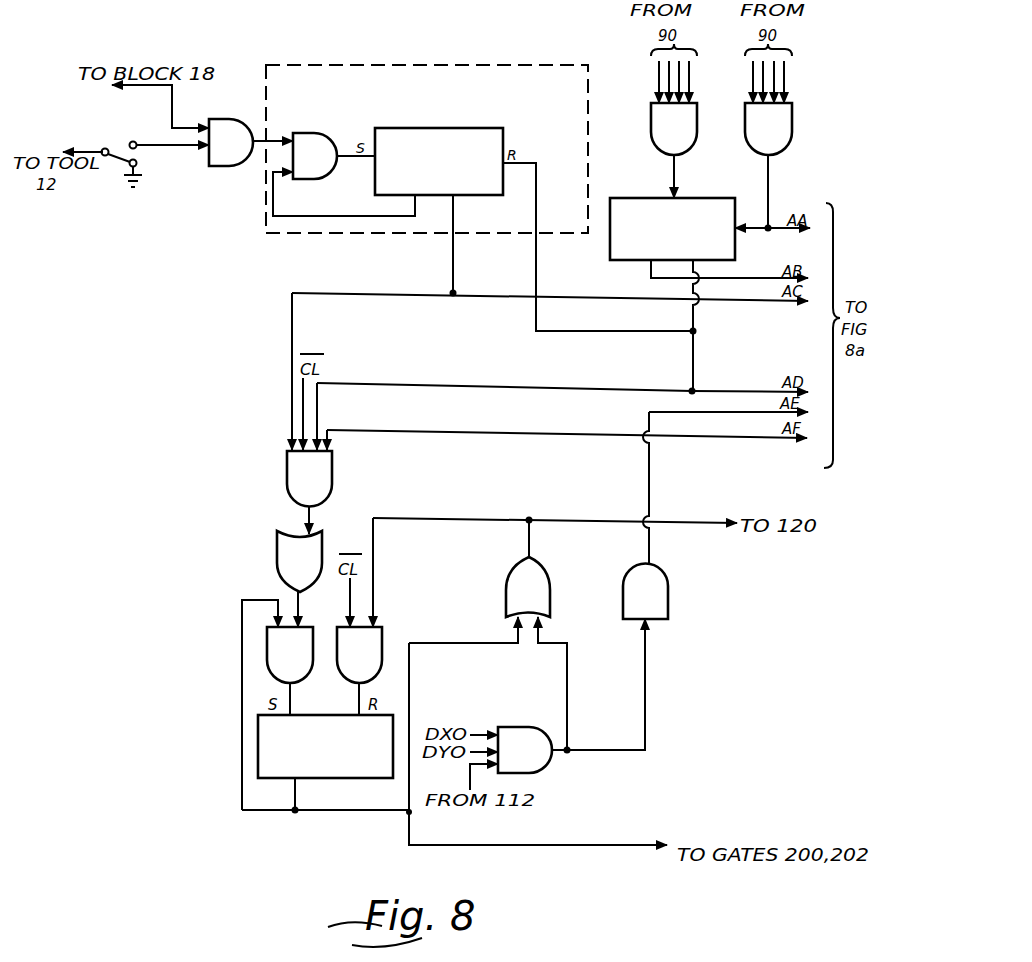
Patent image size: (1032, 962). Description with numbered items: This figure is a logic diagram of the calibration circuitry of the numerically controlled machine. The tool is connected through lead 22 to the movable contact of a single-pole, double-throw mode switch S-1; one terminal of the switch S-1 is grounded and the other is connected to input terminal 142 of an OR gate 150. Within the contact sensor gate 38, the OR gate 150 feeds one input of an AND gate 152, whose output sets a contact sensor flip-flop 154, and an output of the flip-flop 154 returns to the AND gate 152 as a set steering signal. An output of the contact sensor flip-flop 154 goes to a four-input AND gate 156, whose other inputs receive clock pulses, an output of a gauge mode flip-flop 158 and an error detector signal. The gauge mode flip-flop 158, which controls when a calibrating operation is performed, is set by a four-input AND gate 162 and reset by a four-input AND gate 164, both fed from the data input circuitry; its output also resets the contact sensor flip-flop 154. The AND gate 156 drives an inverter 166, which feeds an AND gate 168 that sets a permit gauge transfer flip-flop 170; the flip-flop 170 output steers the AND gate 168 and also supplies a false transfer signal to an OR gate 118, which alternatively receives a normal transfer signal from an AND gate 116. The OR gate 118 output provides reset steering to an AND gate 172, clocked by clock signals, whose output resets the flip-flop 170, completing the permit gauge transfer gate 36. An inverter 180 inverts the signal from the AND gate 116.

The lead 22 is at (104, 148).
The mode switch S-1 is at (116, 162).
The permit gauge transfer gate 36 is at (232, 705).
The contact sensor gate 38 is at (341, 236).
The AND gate 116 is at (540, 773).
The OR gate 118 is at (510, 576).
The input terminal 142 is at (174, 147).
The OR gate 150 is at (256, 104).
The AND gate 152 is at (321, 180).
The contact sensor flip-flop 154 is at (476, 128).
The four-input AND gate 156 is at (332, 472).
The gauge mode flip-flop 158 is at (735, 244).
The AND gate 162 is at (689, 156).
The AND gate 164 is at (784, 156).
The inverter 166 is at (277, 554).
The AND gate 168 is at (306, 683).
The permit gauge transfer flip-flop 170 is at (310, 778).
The AND gate 172 is at (380, 627).
The inverter 180 is at (668, 590).